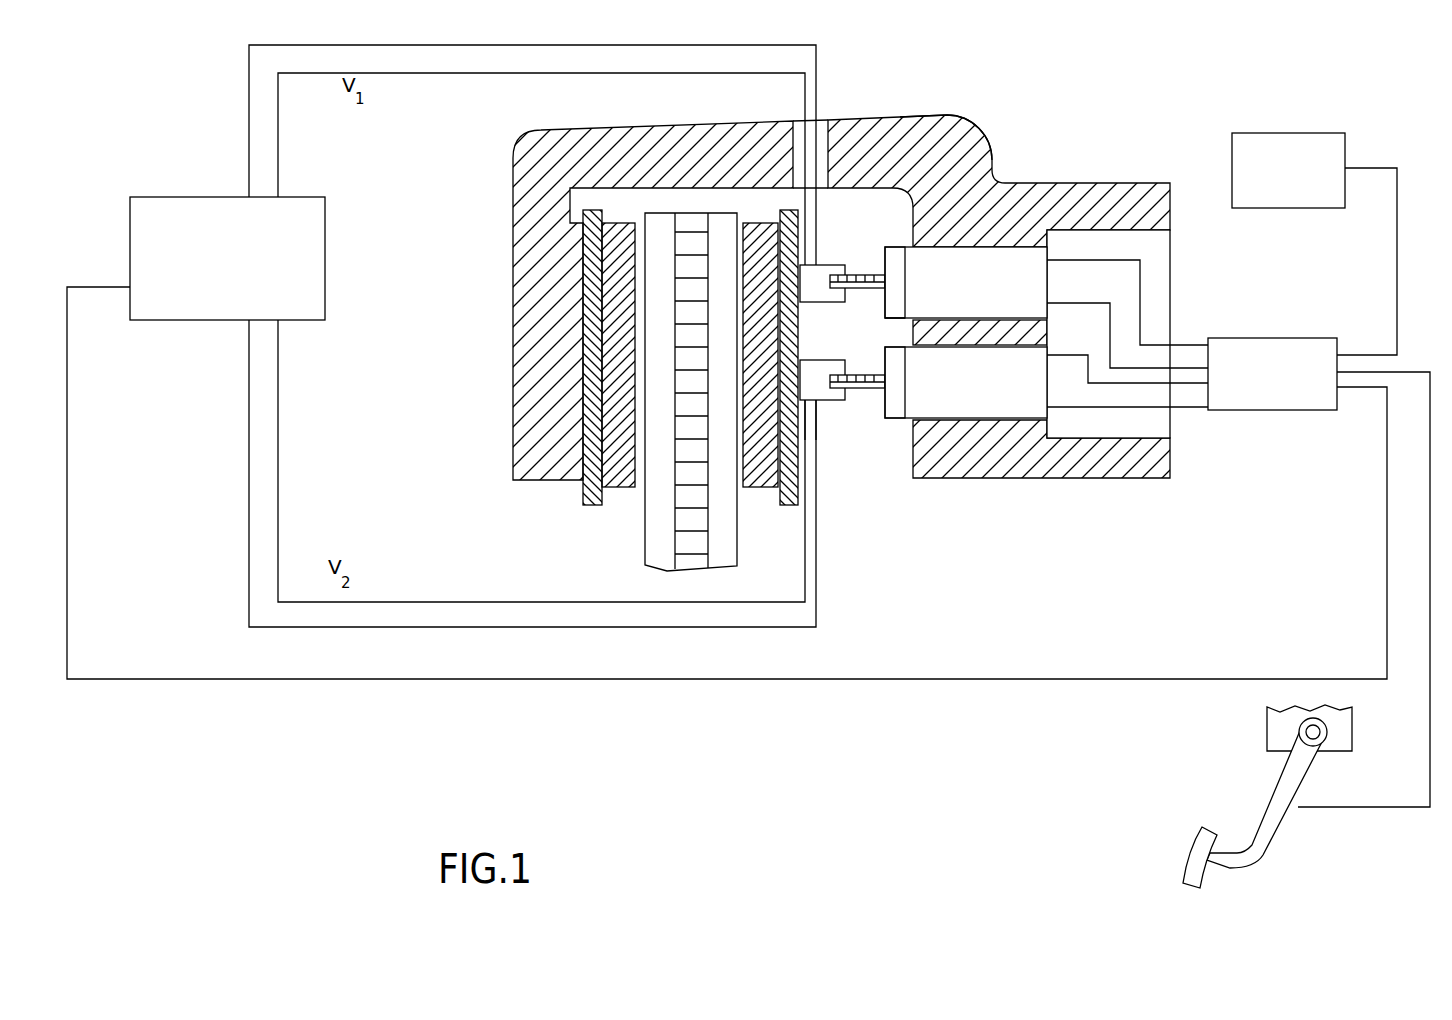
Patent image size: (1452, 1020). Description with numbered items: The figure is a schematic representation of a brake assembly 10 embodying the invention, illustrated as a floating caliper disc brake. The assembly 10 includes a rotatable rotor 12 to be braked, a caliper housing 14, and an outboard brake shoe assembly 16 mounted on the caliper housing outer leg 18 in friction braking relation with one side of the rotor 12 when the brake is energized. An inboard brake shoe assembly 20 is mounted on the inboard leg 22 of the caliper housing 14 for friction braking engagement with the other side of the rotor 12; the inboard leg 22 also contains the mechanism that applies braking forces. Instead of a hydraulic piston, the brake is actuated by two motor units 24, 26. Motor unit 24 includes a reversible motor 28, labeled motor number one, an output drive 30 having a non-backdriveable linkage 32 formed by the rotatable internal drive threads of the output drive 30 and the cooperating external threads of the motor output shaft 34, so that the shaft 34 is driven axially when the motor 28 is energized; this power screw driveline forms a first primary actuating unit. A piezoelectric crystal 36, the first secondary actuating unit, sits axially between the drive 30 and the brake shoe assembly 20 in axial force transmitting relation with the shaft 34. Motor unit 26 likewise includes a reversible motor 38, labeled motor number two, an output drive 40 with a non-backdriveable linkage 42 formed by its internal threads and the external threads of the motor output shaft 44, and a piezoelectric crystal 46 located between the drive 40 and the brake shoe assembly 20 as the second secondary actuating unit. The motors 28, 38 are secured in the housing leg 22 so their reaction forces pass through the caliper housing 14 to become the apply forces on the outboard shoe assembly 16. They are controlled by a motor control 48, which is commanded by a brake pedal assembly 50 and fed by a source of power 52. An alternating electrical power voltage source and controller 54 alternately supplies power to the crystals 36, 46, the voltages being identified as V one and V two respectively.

The brake assembly 10 is at (1012, 122).
The rotor 12 is at (662, 215).
The caliper housing 14 is at (949, 112).
The outboard brake shoe assembly 16 is at (590, 205).
The caliper housing outer leg 18 is at (525, 297).
The inboard brake shoe assembly 20 is at (772, 215).
The inboard leg 22 is at (1113, 190).
The motor unit 24 is at (851, 254).
The motor unit 26 is at (855, 412).
The reversible motor 28 is at (1027, 255).
The output drive 30 is at (890, 291).
The non-backdriveable linkage 32 is at (882, 307).
The motor output shaft 34 is at (872, 276).
The piezoelectric crystal 36 is at (818, 268).
The reversible motor 38 is at (997, 400).
The output drive 40 is at (888, 362).
The non-backdriveable linkage 42 is at (882, 412).
The motor output shaft 44 is at (880, 388).
The piezoelectric crystal 46 is at (817, 378).
The motor control 48 is at (1301, 337).
The brake pedal assembly 50 is at (1210, 790).
The source of power 52 is at (1340, 148).
The alternating electrical power voltage source and controller 54 is at (147, 194).